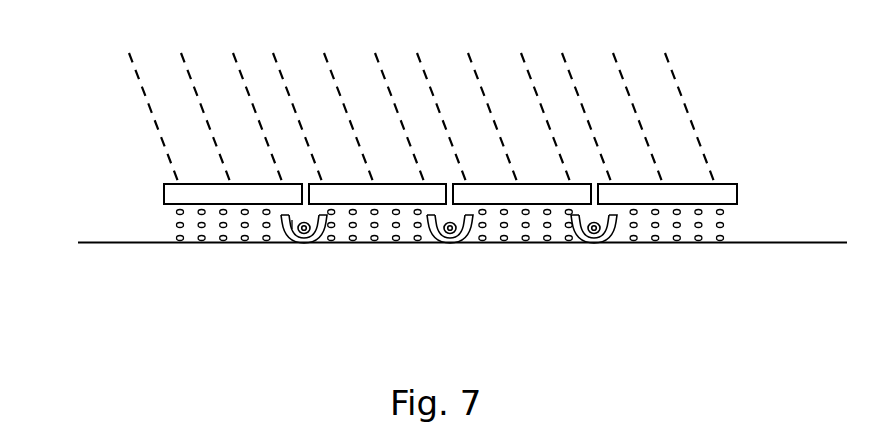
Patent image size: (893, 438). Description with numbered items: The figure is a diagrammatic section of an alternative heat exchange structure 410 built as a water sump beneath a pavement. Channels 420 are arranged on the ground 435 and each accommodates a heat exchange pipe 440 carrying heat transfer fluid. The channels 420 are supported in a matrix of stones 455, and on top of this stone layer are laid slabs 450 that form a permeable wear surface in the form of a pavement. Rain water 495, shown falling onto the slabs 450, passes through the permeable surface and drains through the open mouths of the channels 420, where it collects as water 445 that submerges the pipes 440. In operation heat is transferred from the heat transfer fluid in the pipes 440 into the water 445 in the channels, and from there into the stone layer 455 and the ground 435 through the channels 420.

The heat exchange structure 410 is at (752, 187).
The channel 420 is at (320, 245).
The ground 435 is at (97, 242).
The heat exchange pipe 440 is at (299, 246).
The water 445 is at (288, 244).
The slab 450 is at (177, 185).
The matrix of stones 455 is at (173, 227).
The rain water 495 is at (142, 92).